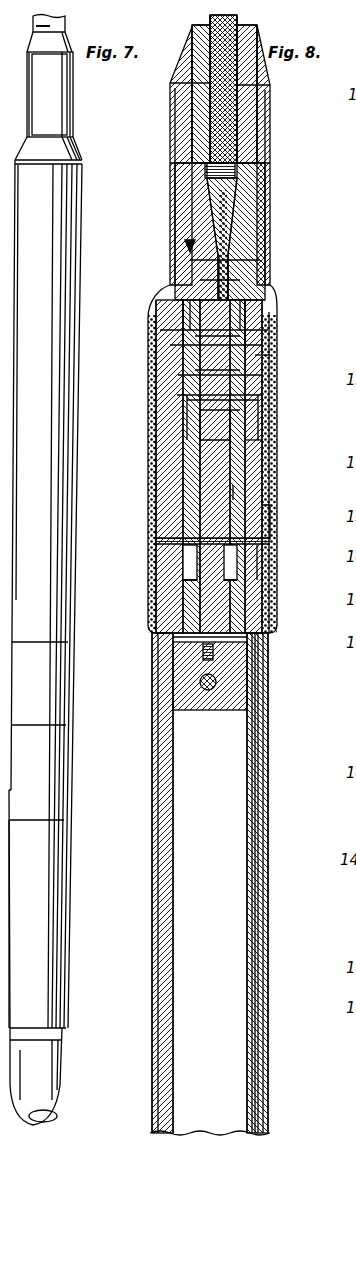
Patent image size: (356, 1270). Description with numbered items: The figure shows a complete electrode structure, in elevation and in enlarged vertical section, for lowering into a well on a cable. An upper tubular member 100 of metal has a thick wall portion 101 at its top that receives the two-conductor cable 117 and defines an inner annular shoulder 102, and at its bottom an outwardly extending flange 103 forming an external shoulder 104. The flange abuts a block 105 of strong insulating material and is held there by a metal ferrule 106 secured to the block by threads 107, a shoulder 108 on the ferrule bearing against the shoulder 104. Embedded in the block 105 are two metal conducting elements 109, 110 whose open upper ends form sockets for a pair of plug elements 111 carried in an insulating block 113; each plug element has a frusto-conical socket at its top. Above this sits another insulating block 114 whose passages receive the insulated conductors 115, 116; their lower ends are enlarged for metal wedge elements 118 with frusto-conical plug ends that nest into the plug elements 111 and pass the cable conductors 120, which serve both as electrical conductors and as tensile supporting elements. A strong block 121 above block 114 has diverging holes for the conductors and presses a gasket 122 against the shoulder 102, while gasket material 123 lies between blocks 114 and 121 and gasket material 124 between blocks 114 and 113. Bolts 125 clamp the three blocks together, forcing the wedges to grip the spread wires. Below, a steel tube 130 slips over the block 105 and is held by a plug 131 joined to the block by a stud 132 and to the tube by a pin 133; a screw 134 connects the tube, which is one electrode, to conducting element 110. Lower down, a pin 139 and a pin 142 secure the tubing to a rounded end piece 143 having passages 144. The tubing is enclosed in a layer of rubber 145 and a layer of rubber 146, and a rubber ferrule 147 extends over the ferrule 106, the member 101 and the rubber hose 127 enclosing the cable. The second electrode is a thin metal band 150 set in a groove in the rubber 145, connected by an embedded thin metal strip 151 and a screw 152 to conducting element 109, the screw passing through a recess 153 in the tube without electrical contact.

In FIG. 8, the upper tubular member 100 is at (265, 237).
In FIG. 8, the thick wall portion 101 is at (265, 112).
In FIG. 8, the inner annular shoulder 102 is at (262, 155).
In FIG. 8, the outwardly extending flange 103 is at (257, 370).
In FIG. 8, the external shoulder 104 is at (260, 335).
In FIG. 8, the block of insulating material 105 is at (255, 443).
In FIG. 8, the metal ferrule 106 is at (257, 463).
In FIG. 8, the threads 107 is at (258, 410).
In FIG. 8, the shoulder 108 is at (272, 360).
In FIG. 8, the metal conducting element 109 is at (233, 485).
In FIG. 8, the metal conducting element 110 is at (180, 480).
In FIG. 8, the plug elements 111 is at (187, 422).
In FIG. 8, the block of insulating material 113 is at (178, 375).
In FIG. 8, the block of insulating material 114 is at (262, 263).
In FIG. 8, the insulated conductor 115 is at (193, 253).
In FIG. 8, the insulated conductor 116 is at (235, 287).
In FIG. 8, the two-conductor cable 117 is at (263, 92).
In FIG. 8, the metal wedge elements 118 is at (168, 322).
In FIG. 8, the metal conducting elements 120 is at (163, 342).
In FIG. 8, the block 121 is at (257, 182).
In FIG. 8, the gasket 122 is at (185, 157).
In FIG. 8, the gasket material 123 is at (185, 248).
In FIG. 8, the gasket material 124 is at (277, 330).
In FIG. 8, the bolts 125 is at (177, 395).
In FIG. 8, the rubber hose 127 is at (170, 77).
In FIG. 8, the steel tube 130 is at (173, 677).
In FIG. 8, the plug 131 is at (238, 665).
In FIG. 8, the stud 132 is at (255, 637).
In FIG. 8, the pin 133 is at (216, 682).
In FIG. 8, the screw 134 is at (168, 540).
In FIG. 7, the pin 139 is at (67, 850).
In FIG. 7, the pin 142 is at (88, 1003).
In FIG. 7, the end piece 143 is at (52, 1068).
In FIG. 7, the passages 144 is at (52, 1113).
In FIG. 7, the layer of rubber 145 is at (53, 508).
In FIG. 8, the layer of rubber 145 is at (152, 762).
In FIG. 7, the layer of rubber 146 is at (53, 893).
In FIG. 7, the rubber ferrule 147 is at (72, 134).
In FIG. 8, the rubber ferrule 147 is at (265, 222).
In FIG. 7, the thin metal band 150 is at (50, 673).
In FIG. 8, the thin metal strip 151 is at (257, 745).
In FIG. 8, the screw 152 is at (272, 508).
In FIG. 8, the recess 153 is at (257, 557).